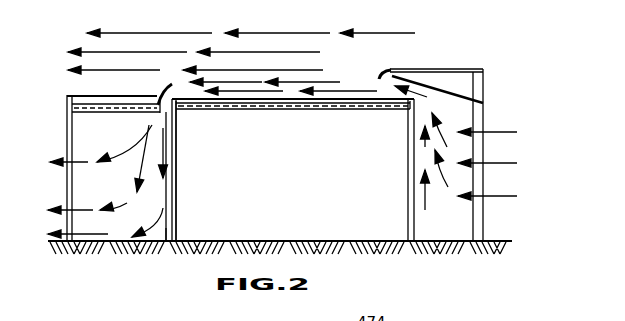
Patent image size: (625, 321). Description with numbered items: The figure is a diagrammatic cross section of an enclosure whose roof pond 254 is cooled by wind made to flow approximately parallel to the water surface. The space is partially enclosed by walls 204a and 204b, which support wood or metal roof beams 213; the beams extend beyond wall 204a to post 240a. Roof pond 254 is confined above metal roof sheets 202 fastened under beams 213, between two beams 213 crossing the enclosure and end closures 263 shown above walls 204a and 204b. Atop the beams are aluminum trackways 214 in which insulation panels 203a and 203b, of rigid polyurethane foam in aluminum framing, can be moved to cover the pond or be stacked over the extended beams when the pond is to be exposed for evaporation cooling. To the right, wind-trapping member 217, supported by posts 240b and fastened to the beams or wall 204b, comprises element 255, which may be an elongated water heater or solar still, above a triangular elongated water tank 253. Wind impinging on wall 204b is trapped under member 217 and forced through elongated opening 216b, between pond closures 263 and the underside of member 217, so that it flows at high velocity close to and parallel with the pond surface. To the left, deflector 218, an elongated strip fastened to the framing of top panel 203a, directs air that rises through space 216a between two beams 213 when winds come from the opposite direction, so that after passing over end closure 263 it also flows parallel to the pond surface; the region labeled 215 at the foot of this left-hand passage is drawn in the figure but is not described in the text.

The metal roof sheets 202 is at (283, 110).
The top movable insulation panel 203a is at (77, 97).
The insulation panel 203b is at (74, 104).
The wall 204a is at (178, 193).
The wall 204b is at (409, 221).
The roof beams 213 is at (242, 110).
The aluminum trackways 214 is at (78, 110).
The bottom outlet of channel 215 is at (163, 231).
The space (passage) 216a is at (174, 150).
The elongated opening (passage) 216b is at (397, 68).
The wind-trapping member 217 is at (439, 99).
The deflector 218 is at (168, 80).
The post 240a is at (70, 150).
The posts 240b is at (486, 215).
The elongated water tank 253 is at (480, 95).
The roof pond 254 is at (350, 108).
The element (elongated water heater or solar still) 255 is at (481, 52).
The end closures 263 is at (403, 109).